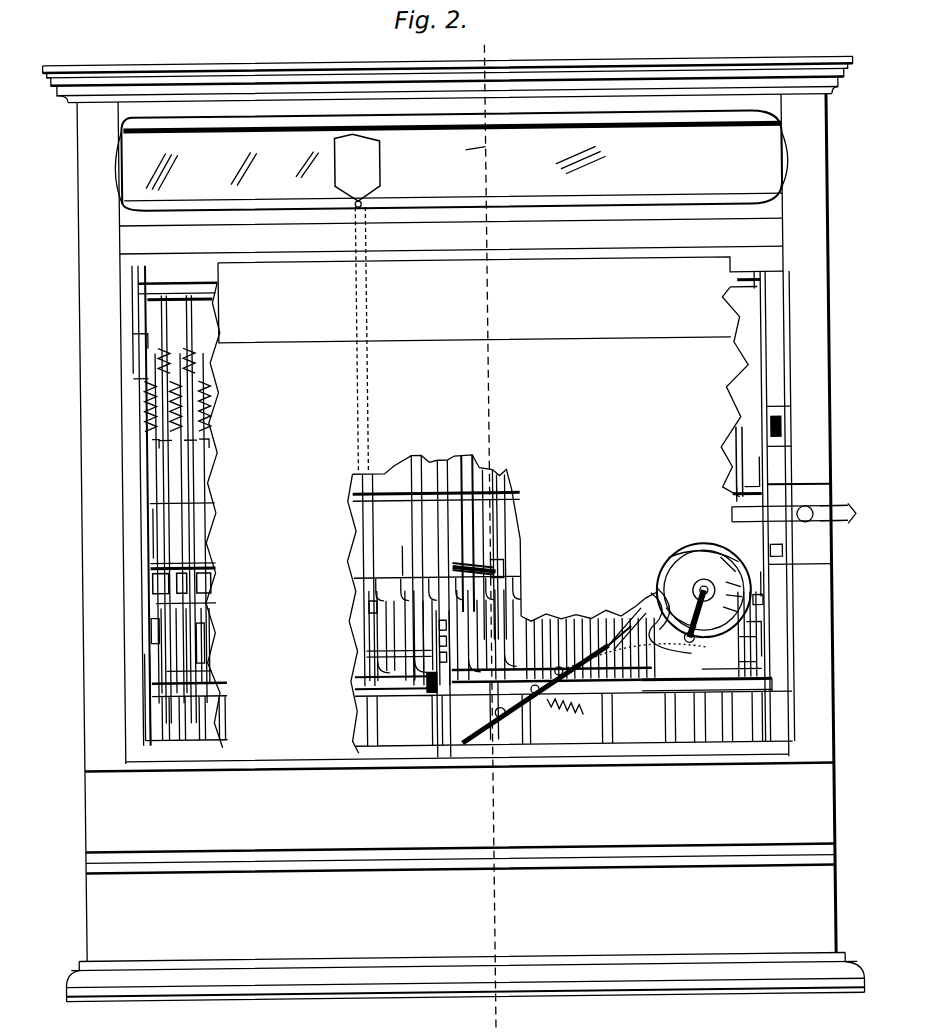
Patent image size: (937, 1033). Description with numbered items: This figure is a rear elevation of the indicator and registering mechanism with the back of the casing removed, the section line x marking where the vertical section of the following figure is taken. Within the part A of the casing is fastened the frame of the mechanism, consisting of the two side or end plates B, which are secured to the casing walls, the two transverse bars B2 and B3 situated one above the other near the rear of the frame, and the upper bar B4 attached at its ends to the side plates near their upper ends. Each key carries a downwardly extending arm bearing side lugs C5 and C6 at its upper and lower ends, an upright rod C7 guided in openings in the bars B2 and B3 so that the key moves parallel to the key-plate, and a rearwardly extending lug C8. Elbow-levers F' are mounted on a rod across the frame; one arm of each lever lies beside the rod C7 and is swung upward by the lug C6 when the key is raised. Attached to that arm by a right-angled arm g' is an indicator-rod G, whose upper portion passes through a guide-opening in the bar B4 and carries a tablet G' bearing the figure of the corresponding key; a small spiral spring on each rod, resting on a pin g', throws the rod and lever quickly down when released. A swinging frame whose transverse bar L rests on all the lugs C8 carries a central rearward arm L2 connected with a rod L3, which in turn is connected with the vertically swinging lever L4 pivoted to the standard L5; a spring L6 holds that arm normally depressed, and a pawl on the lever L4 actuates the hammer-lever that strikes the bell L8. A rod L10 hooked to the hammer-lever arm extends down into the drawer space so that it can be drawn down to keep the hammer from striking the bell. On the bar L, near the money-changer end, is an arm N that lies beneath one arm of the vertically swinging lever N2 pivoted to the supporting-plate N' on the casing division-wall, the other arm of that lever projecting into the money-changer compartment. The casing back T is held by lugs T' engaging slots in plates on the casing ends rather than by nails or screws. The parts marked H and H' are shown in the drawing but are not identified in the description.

The casing part A is at (454, 529).
The section line x is at (483, 532).
The indicator tablet G' is at (374, 303).
The casing back T is at (501, 337).
The side plate B is at (143, 533).
The upper bar B4 is at (213, 296).
The indicator-rod G is at (448, 506).
The arm g' is at (321, 544).
The transverse bar B3 is at (210, 500).
The side lug C6 is at (196, 582).
The valve H is at (202, 648).
The elbow-lever F' is at (472, 630).
The transverse bar B2 is at (222, 697).
The transverse bar L is at (458, 563).
The arm L2 is at (458, 573).
The side lug C5 is at (486, 593).
The rod L3 is at (610, 592).
The upright rod C7 is at (705, 718).
The lug C8 is at (380, 676).
The standard L5 is at (575, 662).
The vertically-swinging lever L4 is at (505, 725).
The rod L10 is at (640, 720).
The spring L6 is at (660, 596).
The bell L8 is at (703, 593).
The lug T' is at (790, 426).
The supporting-plate N' is at (794, 504).
The arm N is at (796, 524).
The vertically-swinging lever N2 is at (818, 530).
The lever H' is at (774, 589).